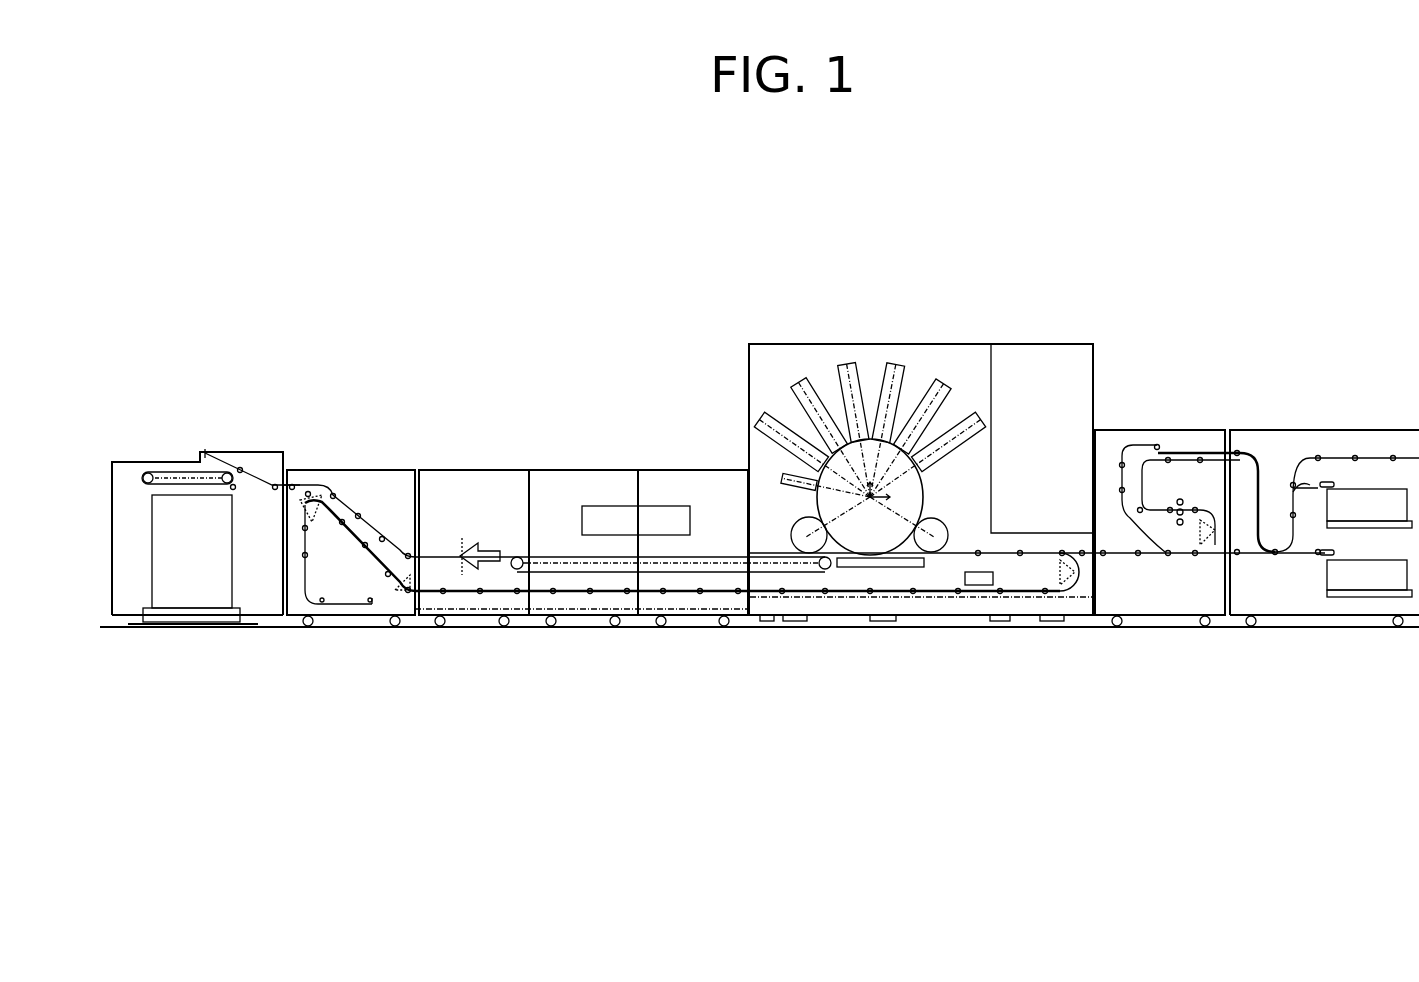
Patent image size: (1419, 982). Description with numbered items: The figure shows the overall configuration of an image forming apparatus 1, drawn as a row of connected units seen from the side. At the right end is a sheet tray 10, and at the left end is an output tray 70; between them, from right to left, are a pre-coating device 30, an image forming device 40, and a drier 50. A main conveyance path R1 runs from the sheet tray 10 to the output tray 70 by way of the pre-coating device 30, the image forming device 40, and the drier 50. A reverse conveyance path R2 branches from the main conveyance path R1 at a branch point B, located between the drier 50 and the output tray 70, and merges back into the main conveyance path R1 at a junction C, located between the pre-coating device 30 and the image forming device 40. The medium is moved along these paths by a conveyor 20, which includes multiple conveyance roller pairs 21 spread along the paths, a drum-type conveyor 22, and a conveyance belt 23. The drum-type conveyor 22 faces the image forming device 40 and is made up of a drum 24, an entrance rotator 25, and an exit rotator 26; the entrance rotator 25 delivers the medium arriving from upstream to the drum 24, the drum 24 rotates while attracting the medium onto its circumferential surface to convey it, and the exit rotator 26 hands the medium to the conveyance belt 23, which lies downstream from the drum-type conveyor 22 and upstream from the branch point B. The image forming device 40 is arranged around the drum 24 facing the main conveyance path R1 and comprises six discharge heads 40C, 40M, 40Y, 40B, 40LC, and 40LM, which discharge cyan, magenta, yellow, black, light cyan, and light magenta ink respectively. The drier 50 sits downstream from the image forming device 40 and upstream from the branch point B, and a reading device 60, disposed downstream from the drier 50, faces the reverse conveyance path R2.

The image forming apparatus 1 is at (1236, 186).
The sheet tray 10 is at (1362, 430).
The conveyor 20 is at (851, 527).
The conveyance roller pairs 21 is at (358, 517).
The drum-type conveyor 22 is at (1037, 540).
The conveyance belt 23 is at (685, 592).
The drum 24 is at (867, 545).
The entrance rotator 25 is at (930, 548).
The exit rotator 26 is at (808, 548).
The pre-coating device 30 is at (1168, 430).
The image forming device 40 is at (921, 424).
The discharge head 40LM is at (759, 418).
The discharge head 40LC is at (799, 380).
The discharge head 40B is at (847, 362).
The discharge head 40Y is at (896, 362).
The discharge head 40M is at (942, 382).
The discharge head 40C is at (979, 418).
The drier 50 is at (663, 506).
The reading device 60 is at (980, 587).
The output tray 70 is at (246, 452).
The branch point B is at (318, 497).
The junction C is at (1062, 553).
The main conveyance path R1 is at (431, 555).
The reverse conveyance path R2 is at (490, 592).